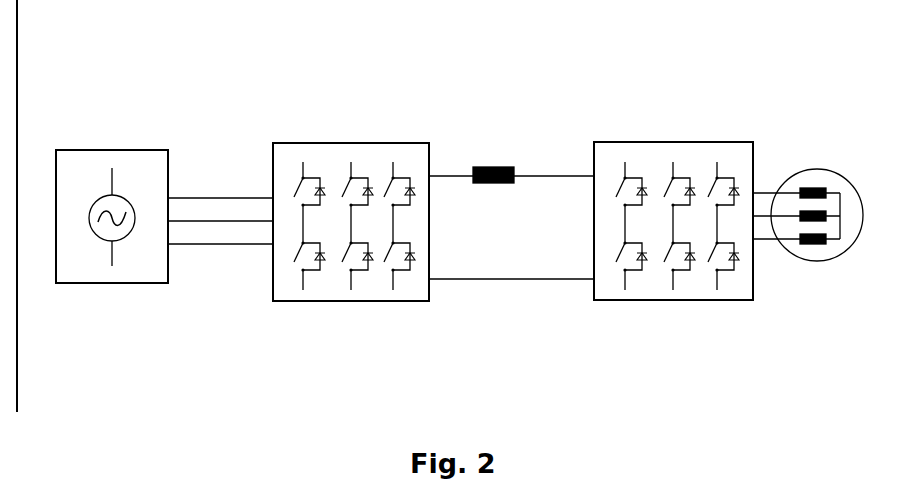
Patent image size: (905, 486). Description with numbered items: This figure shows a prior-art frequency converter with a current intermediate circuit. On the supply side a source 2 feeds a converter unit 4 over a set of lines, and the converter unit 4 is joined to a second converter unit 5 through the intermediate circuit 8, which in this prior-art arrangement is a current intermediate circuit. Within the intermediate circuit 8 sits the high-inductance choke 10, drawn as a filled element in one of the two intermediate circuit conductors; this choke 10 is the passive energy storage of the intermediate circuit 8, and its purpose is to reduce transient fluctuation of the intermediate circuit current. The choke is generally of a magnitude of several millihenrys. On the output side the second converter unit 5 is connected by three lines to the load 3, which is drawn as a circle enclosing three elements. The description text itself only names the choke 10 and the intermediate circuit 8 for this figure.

The AC voltage source / supply network 2 is at (102, 150).
The rectifier (network-side converter) 4 is at (342, 143).
The high-inductance choke 10 is at (490, 167).
The intermediate circuit 8 is at (550, 176).
The inverter (load-side converter) 5 is at (666, 142).
The load (electric motor) 3 is at (807, 168).